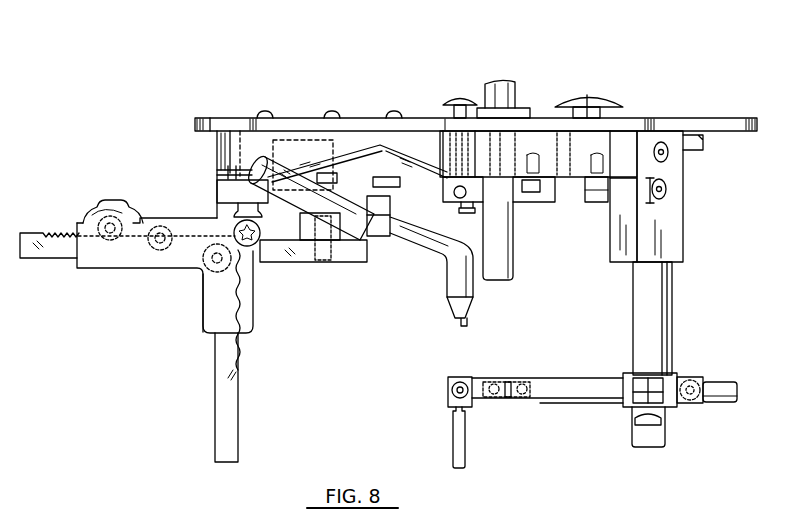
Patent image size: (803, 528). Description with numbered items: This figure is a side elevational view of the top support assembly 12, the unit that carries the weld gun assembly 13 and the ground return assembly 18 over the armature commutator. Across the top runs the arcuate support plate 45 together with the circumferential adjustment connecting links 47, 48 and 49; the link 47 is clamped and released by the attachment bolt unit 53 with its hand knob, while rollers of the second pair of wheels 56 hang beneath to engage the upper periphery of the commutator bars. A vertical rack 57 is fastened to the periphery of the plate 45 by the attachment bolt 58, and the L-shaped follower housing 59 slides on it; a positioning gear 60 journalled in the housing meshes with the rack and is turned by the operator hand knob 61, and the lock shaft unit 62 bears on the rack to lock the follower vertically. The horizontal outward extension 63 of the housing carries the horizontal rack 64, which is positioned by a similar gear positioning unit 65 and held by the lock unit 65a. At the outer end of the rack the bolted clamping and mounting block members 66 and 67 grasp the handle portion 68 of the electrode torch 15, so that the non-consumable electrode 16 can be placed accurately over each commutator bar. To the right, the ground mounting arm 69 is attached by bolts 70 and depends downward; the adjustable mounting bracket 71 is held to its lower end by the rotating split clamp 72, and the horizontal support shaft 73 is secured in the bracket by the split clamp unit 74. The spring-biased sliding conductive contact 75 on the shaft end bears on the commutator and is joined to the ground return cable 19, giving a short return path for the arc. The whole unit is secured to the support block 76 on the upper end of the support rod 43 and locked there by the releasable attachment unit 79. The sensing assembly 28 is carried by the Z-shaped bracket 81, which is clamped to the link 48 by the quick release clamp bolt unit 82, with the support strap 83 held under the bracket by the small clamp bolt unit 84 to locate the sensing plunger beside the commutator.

The top support assembly 12 is at (567, 73).
The weld gun assembly 13 is at (412, 257).
The electrode torch 15 is at (452, 287).
The non-consumable electrode 16 is at (468, 326).
The ground return assembly 18 is at (681, 363).
The ground return cable 19 is at (466, 456).
The sensing assembly 28 is at (460, 82).
The support rod 43 is at (513, 259).
The arcuate support plate 45 is at (306, 136).
The circumferential adjustment connecting link 47 is at (722, 128).
The connecting link 48 is at (636, 127).
The connecting link 49 is at (212, 126).
The attachment bolt unit 53 is at (599, 98).
The second pair of wheels 56 is at (584, 199).
The vertical rack 57 is at (218, 196).
The attachment bolt 58 is at (232, 171).
The follower housing 59 is at (243, 326).
The positioning gear 60 is at (256, 252).
The operator hand knob 61 is at (268, 231).
The lock shaft unit 62 is at (194, 271).
The horizontal outward extension 63 is at (88, 267).
The horizontal rack 64 is at (36, 236).
The gear positioning unit 65 is at (113, 201).
The lock unit 65a is at (152, 270).
The clamping and mounting block member 66 is at (357, 266).
The clamping and mounting block member 67 is at (393, 238).
The handle portion 68 is at (287, 147).
The ground mounting arm 69 is at (684, 285).
The bolts 70 is at (667, 190).
The adjustable mounting bracket 71 is at (672, 404).
The rotating split clamp 72 is at (701, 377).
The horizontal support shaft 73 is at (728, 386).
The split clamp unit 74 is at (634, 404).
The sliding conductive contact 75 is at (448, 387).
The support block 76 is at (531, 205).
The releasable attachment unit 79 is at (519, 110).
The Z-shaped bracket 81 is at (447, 127).
The quick release clamp bolt unit 82 is at (449, 101).
The support strap 83 is at (481, 192).
The clamp bolt unit 84 is at (462, 209).